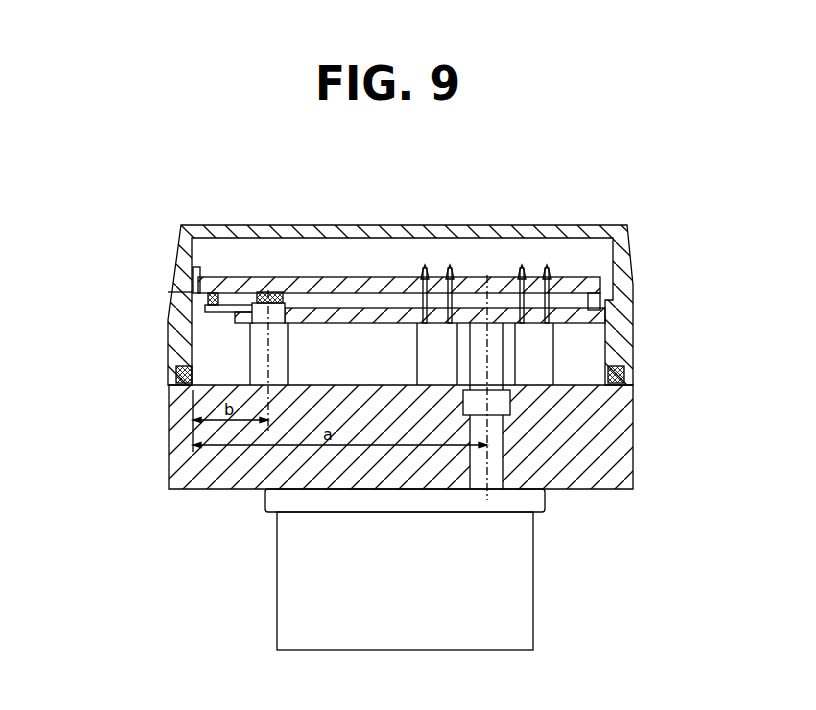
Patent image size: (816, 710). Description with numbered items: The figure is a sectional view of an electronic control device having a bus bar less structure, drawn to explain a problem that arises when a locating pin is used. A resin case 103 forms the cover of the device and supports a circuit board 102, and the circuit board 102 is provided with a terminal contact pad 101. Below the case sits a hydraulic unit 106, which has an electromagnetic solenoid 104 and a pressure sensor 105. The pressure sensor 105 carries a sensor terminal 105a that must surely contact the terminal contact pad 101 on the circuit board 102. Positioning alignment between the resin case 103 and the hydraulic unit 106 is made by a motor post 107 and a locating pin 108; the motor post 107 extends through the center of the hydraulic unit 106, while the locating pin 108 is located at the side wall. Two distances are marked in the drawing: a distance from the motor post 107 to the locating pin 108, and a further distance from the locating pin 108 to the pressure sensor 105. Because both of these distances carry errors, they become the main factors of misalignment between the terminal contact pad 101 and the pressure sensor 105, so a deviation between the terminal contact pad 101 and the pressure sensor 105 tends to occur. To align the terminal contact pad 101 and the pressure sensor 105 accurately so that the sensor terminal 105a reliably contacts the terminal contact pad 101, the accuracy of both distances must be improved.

The terminal contact pad 101 is at (272, 303).
The circuit board 102 is at (377, 277).
The resin case 103 is at (160, 363).
The electromagnetic solenoid 104 is at (550, 358).
The pressure sensor 105 is at (253, 370).
The sensor terminal 105a is at (280, 292).
The hydraulic unit 106 is at (158, 475).
The motor post 107 is at (503, 463).
The locating pin 108 is at (190, 388).